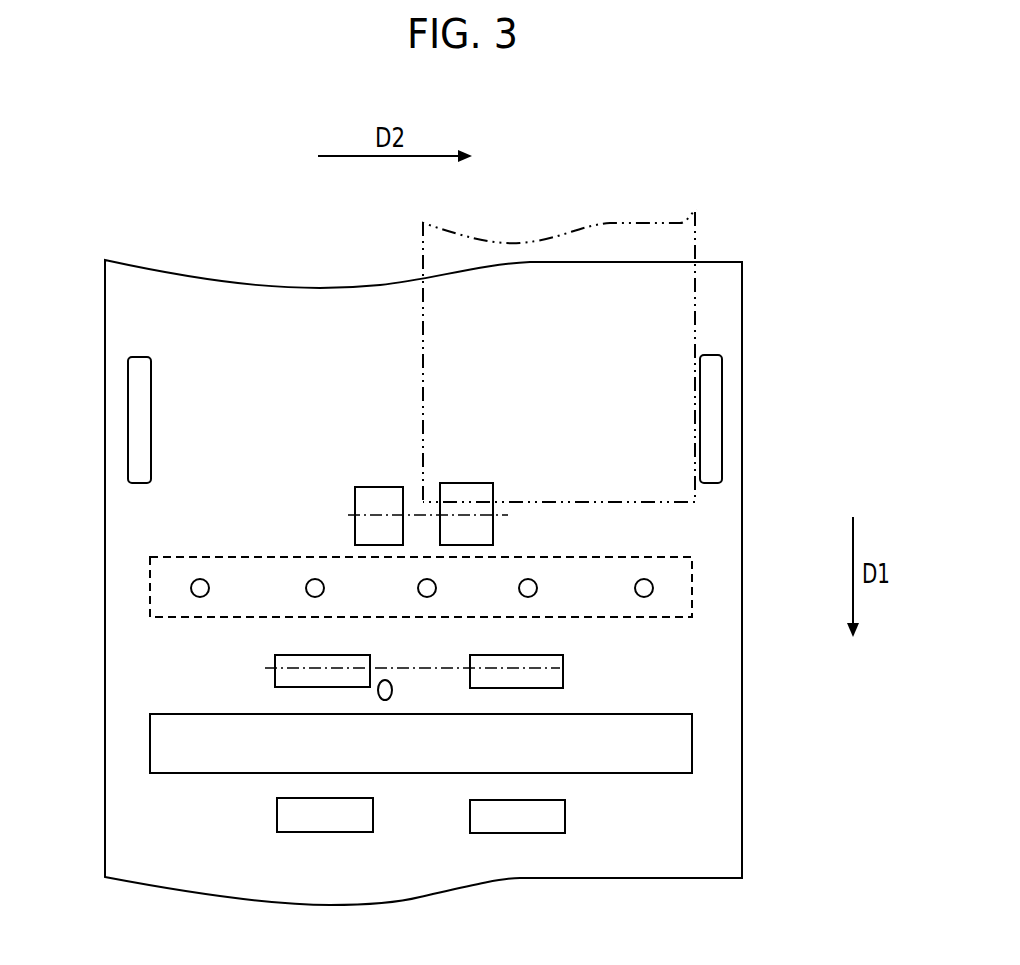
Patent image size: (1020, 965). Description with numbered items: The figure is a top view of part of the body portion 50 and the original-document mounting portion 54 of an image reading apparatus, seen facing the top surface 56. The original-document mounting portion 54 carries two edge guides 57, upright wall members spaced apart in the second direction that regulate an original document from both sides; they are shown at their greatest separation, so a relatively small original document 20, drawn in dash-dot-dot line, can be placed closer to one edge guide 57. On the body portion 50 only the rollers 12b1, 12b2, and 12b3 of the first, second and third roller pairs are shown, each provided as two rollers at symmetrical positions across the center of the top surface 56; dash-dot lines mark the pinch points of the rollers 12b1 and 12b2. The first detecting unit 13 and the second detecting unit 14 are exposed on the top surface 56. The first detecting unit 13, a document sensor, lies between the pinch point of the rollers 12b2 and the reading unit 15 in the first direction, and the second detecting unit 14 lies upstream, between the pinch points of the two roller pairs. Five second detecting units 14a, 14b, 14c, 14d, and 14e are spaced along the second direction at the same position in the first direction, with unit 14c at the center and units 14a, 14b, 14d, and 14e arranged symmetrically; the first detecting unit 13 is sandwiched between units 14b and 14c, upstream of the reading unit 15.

The rollers of the first roller pair 12b1 is at (458, 498).
The rollers of the second roller pair 12b2 is at (370, 655).
The rollers of the third roller pair 12b3 is at (367, 832).
The first detecting unit 13 is at (392, 688).
The second detecting unit 14 is at (694, 580).
The second detecting unit 14a is at (200, 579).
The second detecting unit 14b is at (310, 580).
The second detecting unit 14c is at (420, 597).
The second detecting unit 14d is at (535, 580).
The second detecting unit 14e is at (644, 578).
The reading unit 15 is at (158, 735).
The original document 20 is at (700, 211).
The body portion 50 is at (423, 582).
The original-document mounting portion 54 is at (118, 300).
The top surface 56 is at (125, 548).
The edge guides 57 is at (127, 402).